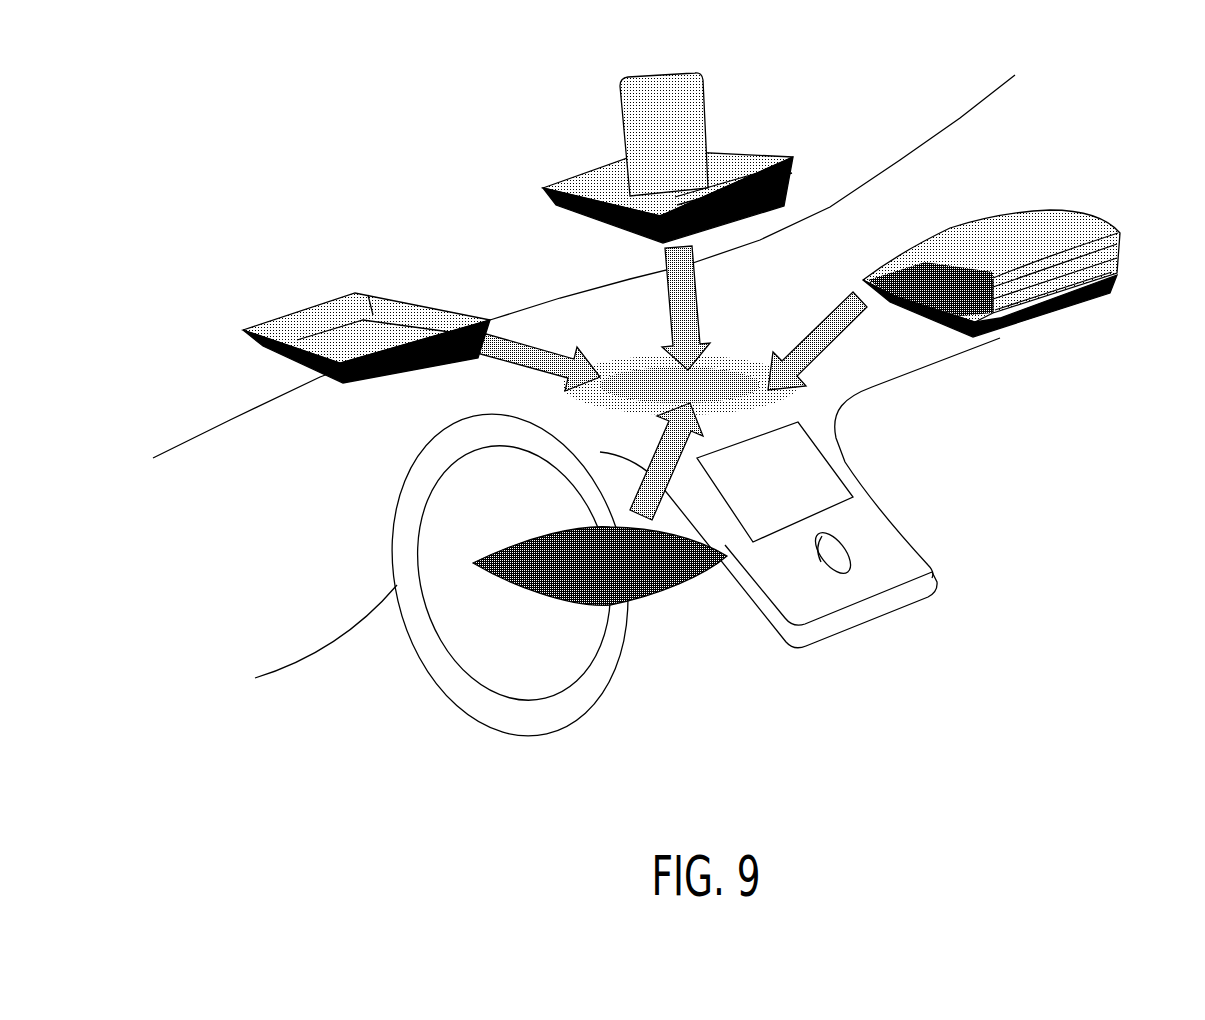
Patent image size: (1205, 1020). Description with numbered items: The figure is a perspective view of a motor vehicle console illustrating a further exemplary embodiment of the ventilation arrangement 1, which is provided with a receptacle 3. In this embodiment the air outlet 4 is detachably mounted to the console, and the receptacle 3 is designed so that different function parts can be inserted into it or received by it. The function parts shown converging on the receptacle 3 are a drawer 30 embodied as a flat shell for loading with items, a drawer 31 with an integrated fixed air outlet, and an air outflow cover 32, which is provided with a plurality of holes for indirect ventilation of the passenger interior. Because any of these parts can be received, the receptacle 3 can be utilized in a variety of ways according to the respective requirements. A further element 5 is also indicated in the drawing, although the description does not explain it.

The ventilation arrangement 1 is at (247, 110).
The receptacle 3 is at (623, 362).
The air outlet 4 is at (927, 249).
The dashboard 5 is at (236, 455).
The drawer 30 is at (338, 302).
The drawer with integrated fixed air outlet 31 is at (592, 180).
The air outflow cover 32 is at (657, 590).